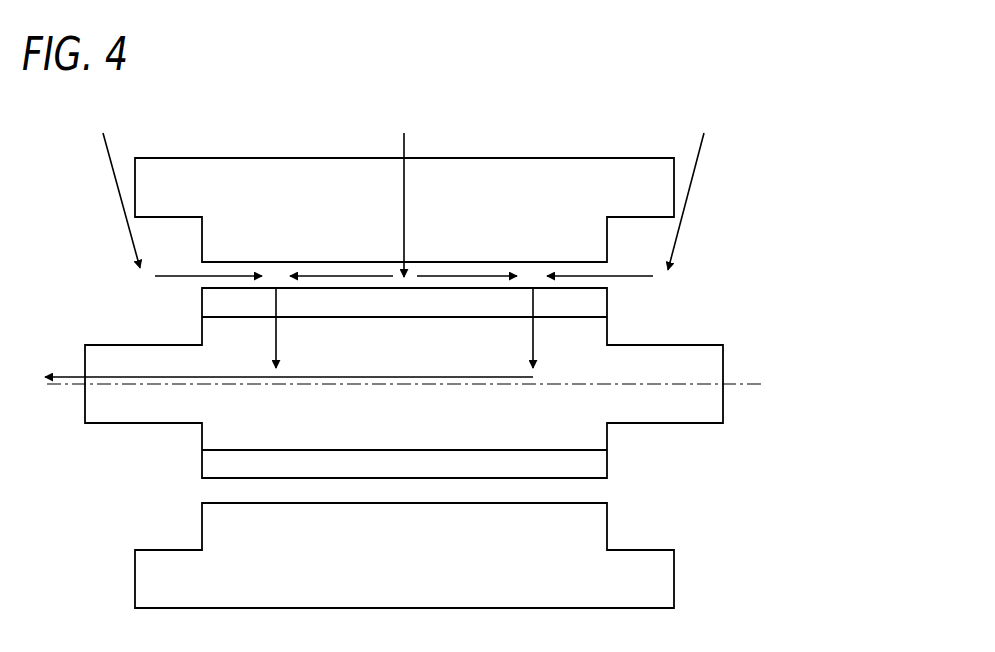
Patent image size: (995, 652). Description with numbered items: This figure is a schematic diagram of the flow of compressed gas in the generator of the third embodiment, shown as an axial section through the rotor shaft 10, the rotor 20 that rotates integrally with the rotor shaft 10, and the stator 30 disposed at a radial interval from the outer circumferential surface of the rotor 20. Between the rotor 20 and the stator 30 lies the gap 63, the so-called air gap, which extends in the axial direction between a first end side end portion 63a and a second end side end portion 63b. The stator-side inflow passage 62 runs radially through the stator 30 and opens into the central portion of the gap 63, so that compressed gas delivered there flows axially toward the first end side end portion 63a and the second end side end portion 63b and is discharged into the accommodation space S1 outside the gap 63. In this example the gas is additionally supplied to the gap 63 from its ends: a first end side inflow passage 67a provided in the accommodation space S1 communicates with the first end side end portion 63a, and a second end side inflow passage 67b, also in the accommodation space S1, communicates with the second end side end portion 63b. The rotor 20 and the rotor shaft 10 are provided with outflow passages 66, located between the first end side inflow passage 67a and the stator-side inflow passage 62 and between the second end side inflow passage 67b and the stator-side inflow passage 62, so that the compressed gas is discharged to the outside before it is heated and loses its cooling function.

The rotor shaft 10 is at (707, 402).
The rotor 20 is at (592, 462).
The stator 30 is at (655, 577).
The stator-side inflow passage 62 is at (404, 213).
The gap 63 is at (568, 493).
The first end side end portion 63a is at (607, 270).
The second end side end portion 63b is at (202, 270).
The outflow passages 66 is at (533, 327).
The first end side inflow passage 67a is at (698, 162).
The second end side inflow passage 67b is at (110, 162).
The accommodation space S1 is at (107, 267).